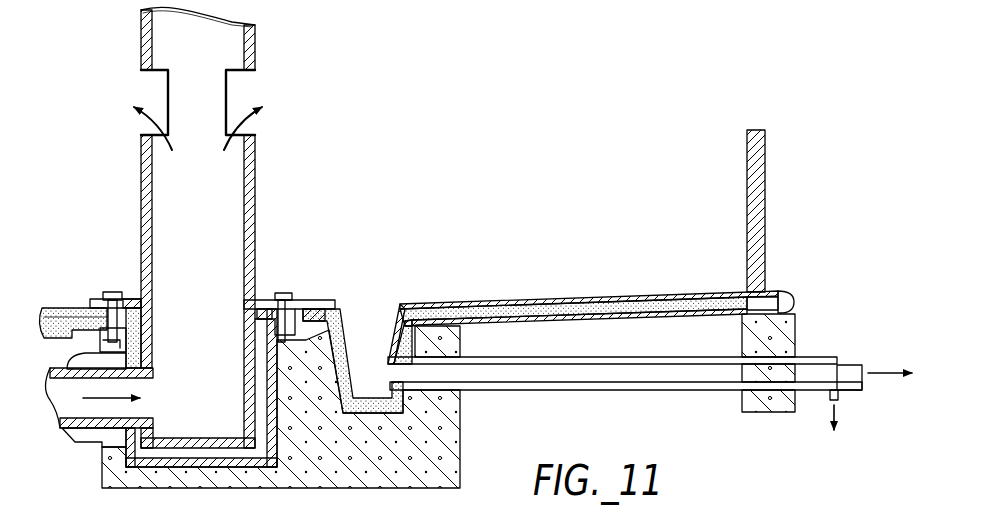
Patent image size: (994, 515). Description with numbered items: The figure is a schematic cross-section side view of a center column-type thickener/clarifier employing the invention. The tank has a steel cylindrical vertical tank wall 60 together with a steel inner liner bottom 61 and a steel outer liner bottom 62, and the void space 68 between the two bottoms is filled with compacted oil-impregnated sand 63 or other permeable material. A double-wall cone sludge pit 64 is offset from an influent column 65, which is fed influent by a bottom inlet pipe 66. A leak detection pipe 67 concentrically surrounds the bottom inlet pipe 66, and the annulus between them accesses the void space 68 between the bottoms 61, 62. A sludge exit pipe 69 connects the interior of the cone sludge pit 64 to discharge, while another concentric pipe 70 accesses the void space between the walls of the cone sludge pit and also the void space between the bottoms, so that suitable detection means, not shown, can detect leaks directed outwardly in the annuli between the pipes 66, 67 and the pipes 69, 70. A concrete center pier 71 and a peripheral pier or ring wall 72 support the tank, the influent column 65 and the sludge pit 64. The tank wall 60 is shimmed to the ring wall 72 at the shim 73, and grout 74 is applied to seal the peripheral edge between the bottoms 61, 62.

The vertical tank wall 60 is at (765, 212).
The inner liner bottom 61 is at (515, 303).
The outer liner bottom 62 is at (547, 318).
The compacted oil-impregnated sand 63 is at (612, 308).
The double-wall cone sludge pit 64 is at (340, 350).
The influent column 65 is at (256, 180).
The bottom inlet pipe 66 is at (62, 430).
The leak detection pipe 67 is at (102, 448).
The void space 68 is at (153, 342).
The sludge exit pipe 69 is at (850, 363).
The concentric pipe 70 is at (703, 390).
The concrete center pier 71 is at (455, 408).
The ring wall 72 is at (795, 348).
The shim 73 is at (767, 290).
The grout 74 is at (793, 303).